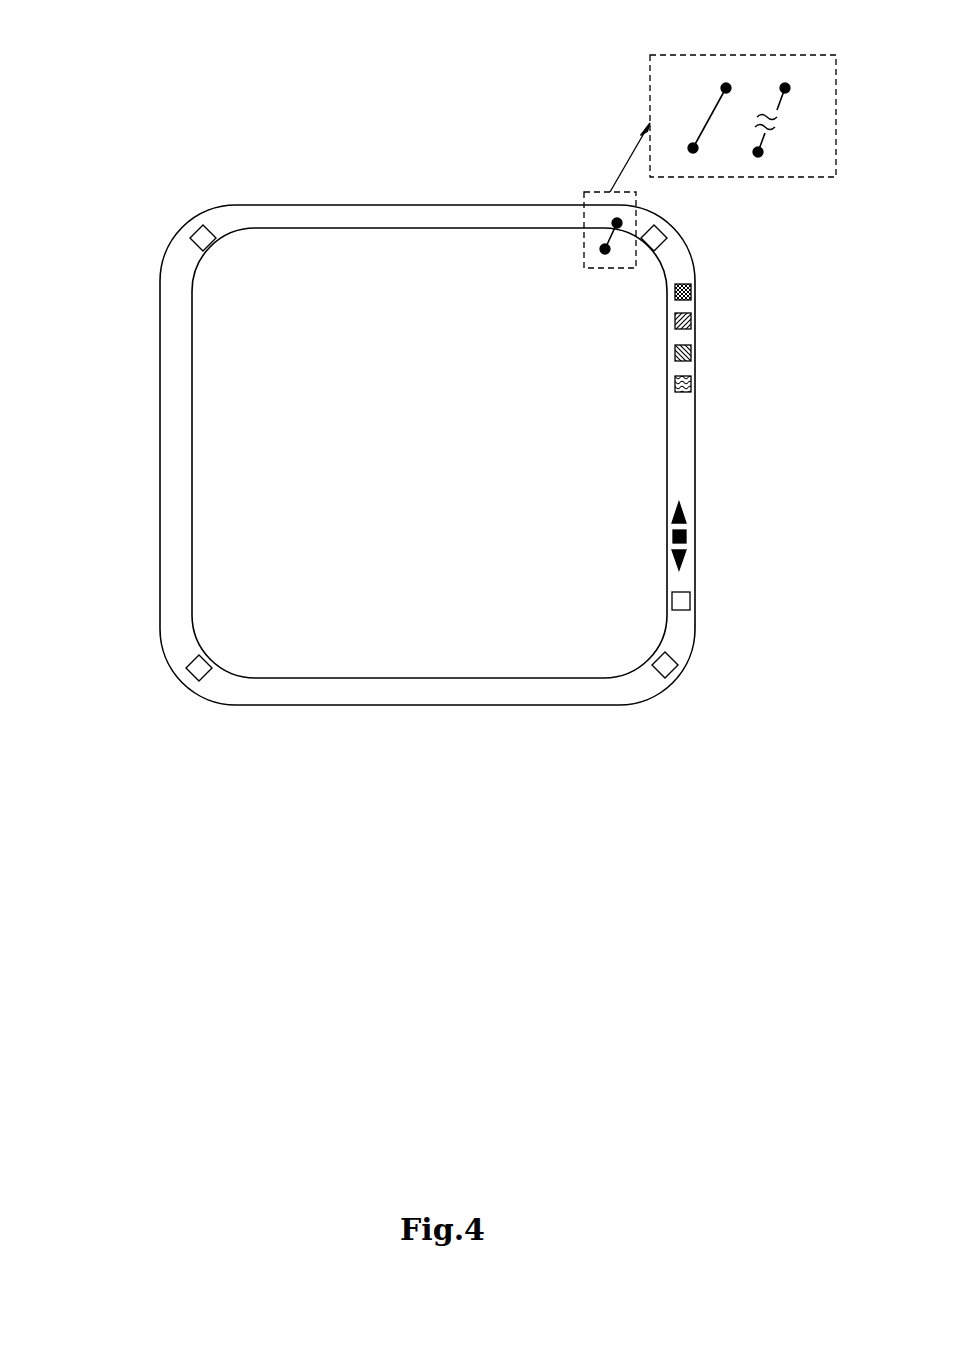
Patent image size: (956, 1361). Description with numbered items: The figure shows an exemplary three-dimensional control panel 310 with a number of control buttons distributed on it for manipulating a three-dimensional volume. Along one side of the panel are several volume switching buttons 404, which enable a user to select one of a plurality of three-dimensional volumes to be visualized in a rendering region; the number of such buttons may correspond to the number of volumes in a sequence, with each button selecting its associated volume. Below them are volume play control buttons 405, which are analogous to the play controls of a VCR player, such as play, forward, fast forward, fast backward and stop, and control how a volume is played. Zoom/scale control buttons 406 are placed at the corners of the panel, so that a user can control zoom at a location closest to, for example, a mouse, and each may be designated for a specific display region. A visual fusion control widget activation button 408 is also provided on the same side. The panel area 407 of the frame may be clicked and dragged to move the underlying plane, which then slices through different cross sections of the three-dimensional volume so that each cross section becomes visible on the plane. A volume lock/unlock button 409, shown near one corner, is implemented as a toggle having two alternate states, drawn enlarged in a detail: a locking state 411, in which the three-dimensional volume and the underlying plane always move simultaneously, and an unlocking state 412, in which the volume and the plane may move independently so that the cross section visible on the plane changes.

The 3D control panel 310 is at (433, 37).
The volume switching buttons 404 is at (691, 297).
The volume play control buttons 405 is at (688, 537).
The zoom/scale control buttons 406 is at (197, 655).
The panel area 407 is at (355, 693).
The visual fusion control widget activation button 408 is at (691, 598).
The volume lock/unlock button 409 is at (600, 238).
The locking state 411 is at (704, 105).
The unlocking state 412 is at (772, 92).